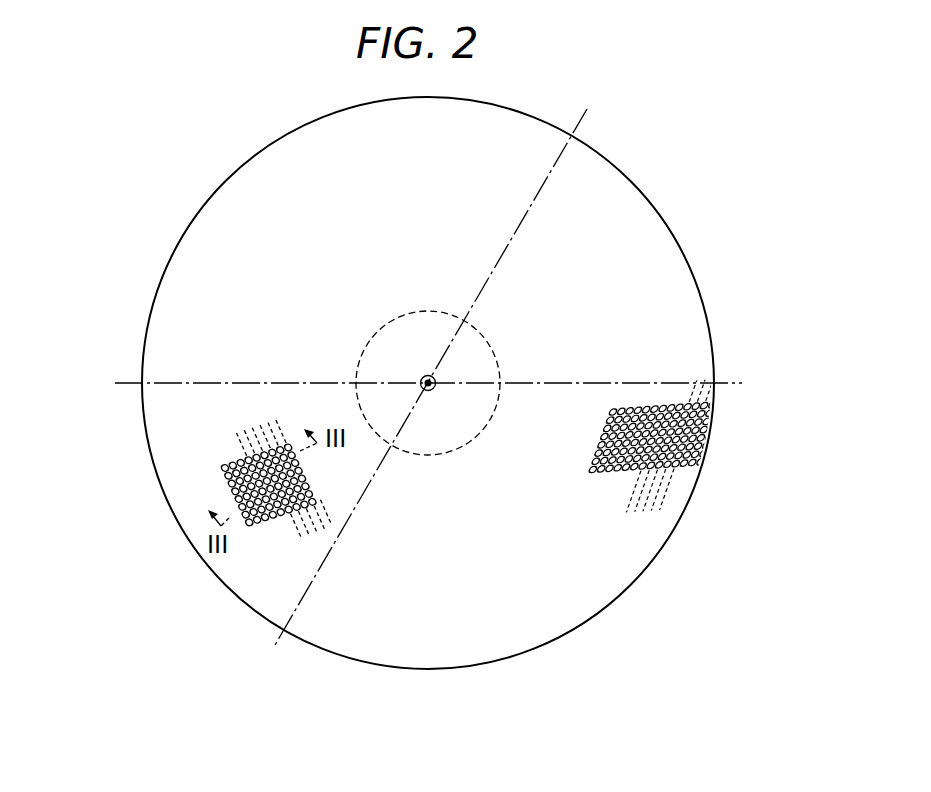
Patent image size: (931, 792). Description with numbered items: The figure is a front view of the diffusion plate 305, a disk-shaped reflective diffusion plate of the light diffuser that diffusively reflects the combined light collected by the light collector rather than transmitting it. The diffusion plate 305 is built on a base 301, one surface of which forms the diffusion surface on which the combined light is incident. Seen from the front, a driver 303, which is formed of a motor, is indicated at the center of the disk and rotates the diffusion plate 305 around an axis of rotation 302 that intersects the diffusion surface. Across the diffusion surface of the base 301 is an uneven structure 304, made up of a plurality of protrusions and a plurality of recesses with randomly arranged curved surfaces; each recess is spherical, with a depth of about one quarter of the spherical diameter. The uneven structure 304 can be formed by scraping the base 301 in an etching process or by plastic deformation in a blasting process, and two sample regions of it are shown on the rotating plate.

The diffusion plate 305 is at (258, 139).
The base 301 is at (235, 204).
The driver 303 is at (362, 356).
The axis of rotation 302 is at (429, 391).
The uneven structure 304 is at (228, 488).